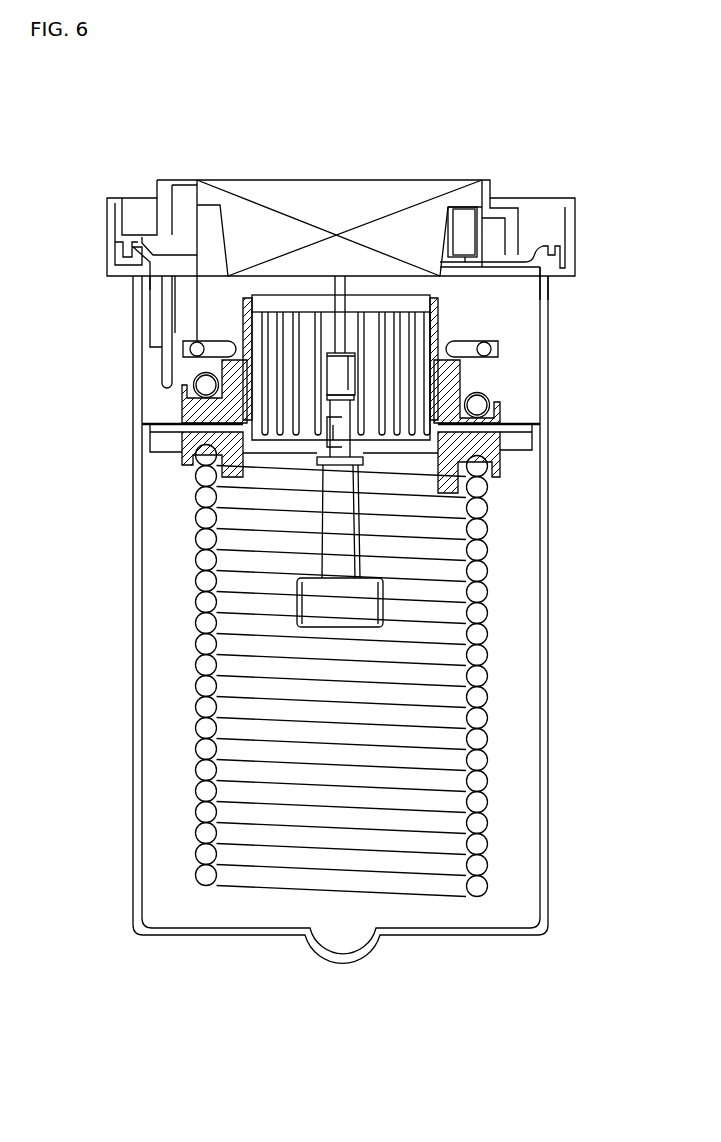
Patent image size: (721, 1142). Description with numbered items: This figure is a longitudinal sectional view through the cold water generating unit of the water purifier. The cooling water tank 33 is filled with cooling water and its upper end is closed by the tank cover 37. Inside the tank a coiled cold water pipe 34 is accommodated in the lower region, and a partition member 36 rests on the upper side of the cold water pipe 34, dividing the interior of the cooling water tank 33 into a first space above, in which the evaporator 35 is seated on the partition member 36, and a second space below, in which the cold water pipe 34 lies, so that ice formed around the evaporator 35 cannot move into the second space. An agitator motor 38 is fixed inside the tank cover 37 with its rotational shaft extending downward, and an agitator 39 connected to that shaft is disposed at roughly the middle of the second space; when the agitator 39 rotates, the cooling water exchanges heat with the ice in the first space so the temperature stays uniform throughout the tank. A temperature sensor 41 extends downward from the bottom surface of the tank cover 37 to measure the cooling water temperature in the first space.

The cooling water tank 33 is at (545, 633).
The cold water pipe 34 is at (480, 717).
The evaporator 35 is at (194, 380).
The partition member 36 is at (182, 403).
The tank cover 37 is at (547, 239).
The agitator motor 38 is at (360, 193).
The agitator 39 is at (343, 538).
The temperature sensor 41 is at (162, 310).